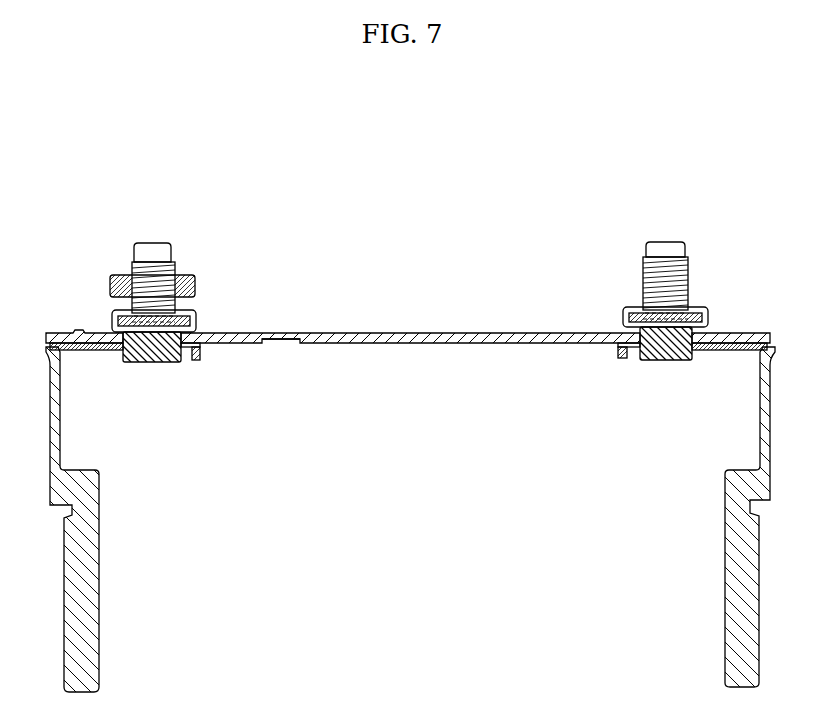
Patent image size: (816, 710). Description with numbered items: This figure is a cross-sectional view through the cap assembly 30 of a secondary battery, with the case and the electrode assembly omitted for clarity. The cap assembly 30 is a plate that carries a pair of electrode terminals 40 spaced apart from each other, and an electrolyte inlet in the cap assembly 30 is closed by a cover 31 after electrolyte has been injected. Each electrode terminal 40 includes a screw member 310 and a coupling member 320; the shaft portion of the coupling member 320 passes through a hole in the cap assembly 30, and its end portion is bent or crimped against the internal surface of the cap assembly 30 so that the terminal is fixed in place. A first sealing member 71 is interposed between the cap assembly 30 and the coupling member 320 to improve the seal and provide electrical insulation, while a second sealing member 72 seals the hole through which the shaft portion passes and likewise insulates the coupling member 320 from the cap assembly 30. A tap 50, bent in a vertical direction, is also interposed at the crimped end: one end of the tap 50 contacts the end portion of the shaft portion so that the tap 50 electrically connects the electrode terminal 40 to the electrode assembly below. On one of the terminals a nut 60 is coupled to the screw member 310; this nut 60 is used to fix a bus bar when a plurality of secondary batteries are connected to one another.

The cap assembly 30 is at (418, 332).
The cover 31 is at (285, 334).
The electrode terminal 40 is at (434, 278).
The tap 50 is at (90, 583).
The nut 60 is at (110, 283).
The first sealing member 71 is at (103, 333).
The second sealing member 72 is at (201, 356).
The screw member 310 is at (190, 265).
The coupling member 320 is at (205, 315).